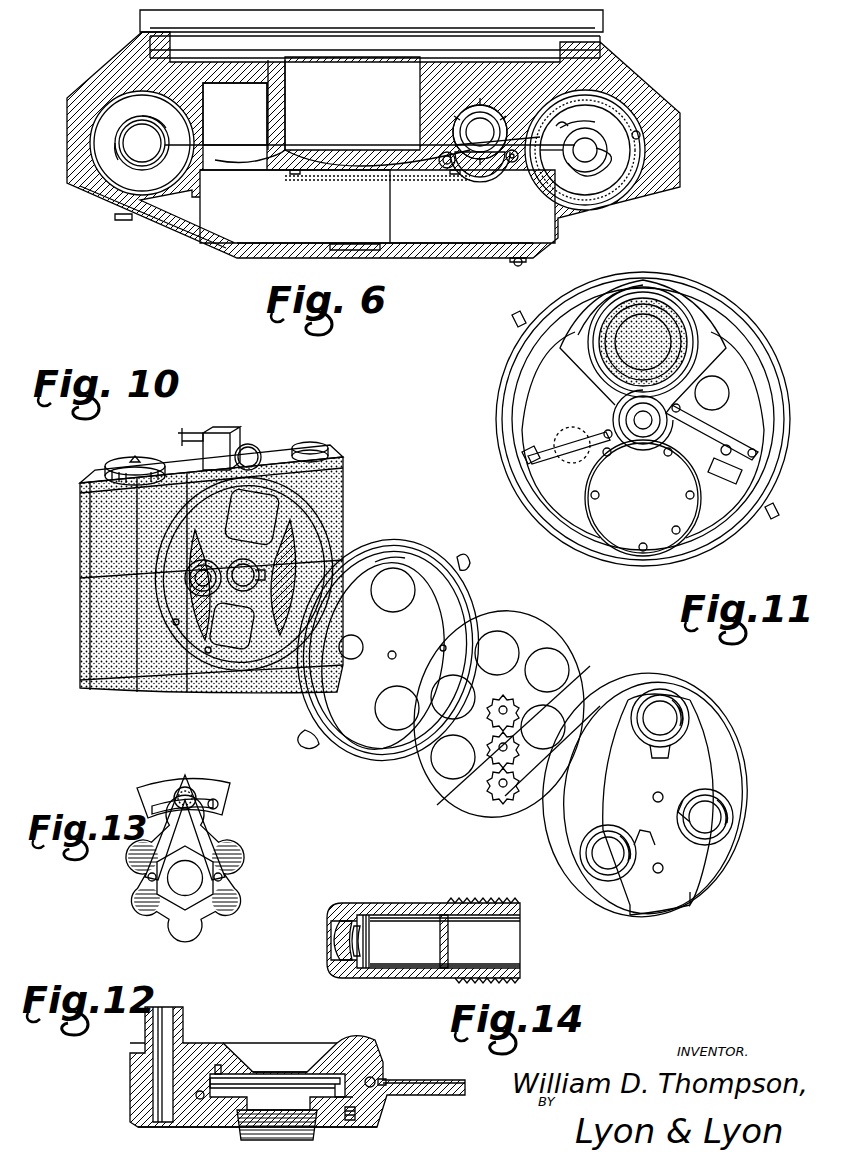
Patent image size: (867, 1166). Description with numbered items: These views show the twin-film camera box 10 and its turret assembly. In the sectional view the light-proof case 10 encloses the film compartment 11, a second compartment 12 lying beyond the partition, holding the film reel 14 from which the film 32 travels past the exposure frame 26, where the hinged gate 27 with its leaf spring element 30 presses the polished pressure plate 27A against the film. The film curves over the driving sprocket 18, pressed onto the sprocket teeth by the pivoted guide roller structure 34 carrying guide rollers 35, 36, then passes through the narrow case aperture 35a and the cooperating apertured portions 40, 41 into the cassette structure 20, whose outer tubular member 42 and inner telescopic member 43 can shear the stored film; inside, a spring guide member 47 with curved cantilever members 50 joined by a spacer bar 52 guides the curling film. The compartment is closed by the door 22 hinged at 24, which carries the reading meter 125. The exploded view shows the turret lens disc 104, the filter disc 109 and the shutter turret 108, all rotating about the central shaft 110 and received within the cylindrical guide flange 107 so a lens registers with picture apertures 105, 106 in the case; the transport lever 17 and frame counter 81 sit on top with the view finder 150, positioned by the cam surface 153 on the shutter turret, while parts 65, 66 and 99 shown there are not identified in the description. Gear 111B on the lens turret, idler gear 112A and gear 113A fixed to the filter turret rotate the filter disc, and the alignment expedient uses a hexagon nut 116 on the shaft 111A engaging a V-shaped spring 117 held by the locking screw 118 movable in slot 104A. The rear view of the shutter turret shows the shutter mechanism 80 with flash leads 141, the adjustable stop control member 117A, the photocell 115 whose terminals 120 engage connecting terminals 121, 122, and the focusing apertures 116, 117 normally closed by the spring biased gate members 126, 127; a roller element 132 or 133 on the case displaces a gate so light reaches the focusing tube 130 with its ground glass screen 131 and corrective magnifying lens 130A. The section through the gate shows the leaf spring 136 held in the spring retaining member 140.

In FIG. 6, the camera box 10 is at (683, 110).
In FIG. 10, the camera box 10 is at (346, 470).
In FIG. 12, the camera box 10 is at (388, 1111).
In FIG. 6, the film carrying compartment 11 is at (180, 215).
In FIG. 6, the film reel 14 is at (135, 132).
In FIG. 6, the driving sprocket 18 is at (482, 106).
In FIG. 6, the cassette structure 20 is at (636, 106).
In FIG. 6, the door 22 is at (430, 260).
In FIG. 6, the hinge 24 is at (516, 266).
In FIG. 6, the exposure frame 26 is at (283, 112).
In FIG. 6, the gate 27 is at (266, 172).
In FIG. 6, the pressure plate 27A is at (376, 162).
In FIG. 6, the leaf spring element 30 is at (316, 162).
In FIG. 6, the film 32 is at (244, 118).
In FIG. 6, the pivoted guide roller structure 34 is at (482, 165).
In FIG. 6, the guide roller 35 is at (448, 168).
In FIG. 6, the case aperture 35a is at (538, 132).
In FIG. 6, the guide roller 36 is at (512, 163).
In FIG. 6, the truncated triangular opening 40 is at (574, 135).
In FIG. 6, the rectangular opening 41 is at (544, 160).
In FIG. 6, the outer tubular member 42 is at (646, 160).
In FIG. 6, the inner telescopic member 43 is at (642, 136).
In FIG. 6, the spring guide member 47 is at (596, 122).
In FIG. 6, the curved resilient cantilever member 50 is at (592, 174).
In FIG. 6, the spacer bar 52 is at (565, 128).
In FIG. 6, the direct current reading meter 125 is at (295, 206).
In FIG. 11, the film carrying compartment 12 is at (785, 368).
In FIG. 11, the shutter mechanism 80 is at (643, 342).
In FIG. 10, the shutter mechanism 80 is at (405, 580).
In FIG. 11, the photoelectric cell element 115 is at (643, 498).
In FIG. 10, the photoelectric cell element 115 is at (376, 711).
In FIG. 11, the focusing aperture 116 is at (716, 392).
In FIG. 10, the focusing aperture 116 is at (342, 655).
In FIG. 13, the focusing aperture 116 is at (162, 890).
In FIG. 11, the focusing aperture 117 is at (578, 468).
In FIG. 10, the focusing aperture 117 is at (440, 647).
In FIG. 13, the focusing aperture 117 is at (214, 836).
In FIG. 11, the terminals 120 is at (676, 536).
In FIG. 11, the spring biased light gate member 126 is at (553, 444).
In FIG. 11, the spring biased gate member 127 is at (722, 420).
In FIG. 11, the roller element 132 is at (757, 457).
In FIG. 10, the roller element 132 is at (177, 628).
In FIG. 12, the roller element 132 is at (348, 1122).
In FIG. 11, the leaf spring 136 is at (712, 474).
In FIG. 12, the leaf spring 136 is at (273, 1090).
In FIG. 11, the spring retaining member 140 is at (730, 447).
In FIG. 12, the spring retaining member 140 is at (320, 1085).
In FIG. 11, the leads 141 is at (583, 326).
In FIG. 10, the dial 66 is at (110, 462).
In FIG. 10, the pointer 65 is at (135, 456).
In FIG. 10, the manually operable lever member 17 is at (180, 438).
In FIG. 10, the view finder 150 is at (232, 432).
In FIG. 10, the frame counter 81 is at (262, 450).
In FIG. 10, the knob 99 is at (318, 444).
In FIG. 10, the connecting terminals 121 is at (305, 502).
In FIG. 10, the picture aperture 105 is at (270, 532).
In FIG. 10, the adjustable stop control member 117A is at (383, 558).
In FIG. 10, the roller element 133 is at (262, 525).
In FIG. 10, the focusing tube 130 is at (195, 580).
In FIG. 14, the focusing tube 130 is at (318, 918).
In FIG. 14, the corrective magnifying lens 130A is at (337, 952).
In FIG. 14, the ground glass screen 131 is at (434, 932).
In FIG. 10, the centrally located shaft 110 is at (265, 576).
In FIG. 10, the picture aperture 106 is at (232, 645).
In FIG. 10, the connecting terminals 122 is at (210, 655).
In FIG. 10, the cam surface 153 is at (390, 552).
In FIG. 10, the cylindrical guide flange 107 is at (470, 600).
In FIG. 10, the shutter turret 108 is at (383, 656).
In FIG. 12, the shutter turret 108 is at (208, 1050).
In FIG. 10, the filter disc 109 is at (540, 628).
In FIG. 13, the shaft 111A is at (190, 890).
In FIG. 10, the six-toothed gear 111B is at (503, 800).
In FIG. 13, the six-toothed gear 111B is at (222, 880).
In FIG. 10, the idler gear 112A is at (440, 800).
In FIG. 10, the gear 113A is at (578, 670).
In FIG. 10, the turret lens disc 104 is at (715, 712).
In FIG. 13, the slot 104A is at (220, 804).
In FIG. 13, the releasable locking screw 118 is at (192, 792).